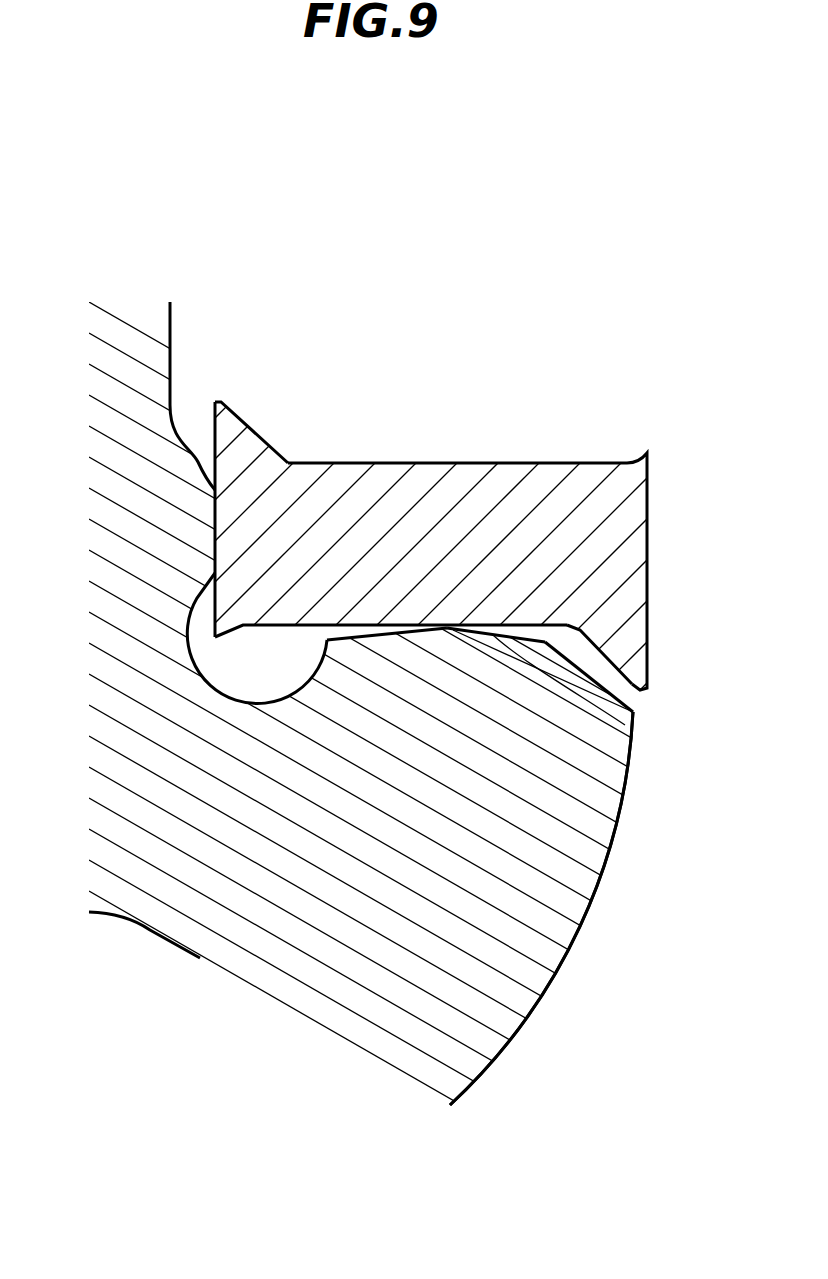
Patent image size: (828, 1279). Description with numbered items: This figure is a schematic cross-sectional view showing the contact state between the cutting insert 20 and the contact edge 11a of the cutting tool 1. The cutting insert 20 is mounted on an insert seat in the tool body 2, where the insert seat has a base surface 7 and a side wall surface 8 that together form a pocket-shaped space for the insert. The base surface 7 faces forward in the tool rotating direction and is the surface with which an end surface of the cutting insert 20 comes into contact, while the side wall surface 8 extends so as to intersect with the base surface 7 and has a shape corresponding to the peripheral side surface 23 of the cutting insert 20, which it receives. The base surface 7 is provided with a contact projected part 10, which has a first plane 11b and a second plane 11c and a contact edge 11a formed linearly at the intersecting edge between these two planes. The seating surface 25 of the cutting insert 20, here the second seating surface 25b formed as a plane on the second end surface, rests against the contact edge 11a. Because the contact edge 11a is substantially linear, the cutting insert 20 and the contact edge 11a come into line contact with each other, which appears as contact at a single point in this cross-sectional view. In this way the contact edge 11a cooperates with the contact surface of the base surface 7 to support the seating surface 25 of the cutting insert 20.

The cutting tool 1 is at (118, 462).
The tool body 2 is at (152, 455).
The base surface 7 is at (623, 780).
The side wall surface 8 is at (215, 528).
The contact projected part 10 is at (417, 847).
The contact edge 11a is at (600, 840).
The first plane 11b is at (633, 720).
The second plane 11c is at (312, 830).
The cutting insert 20 is at (412, 530).
The peripheral side surface 23 is at (217, 510).
The seating surface 25 is at (403, 625).
The second seating surface 25b is at (480, 625).